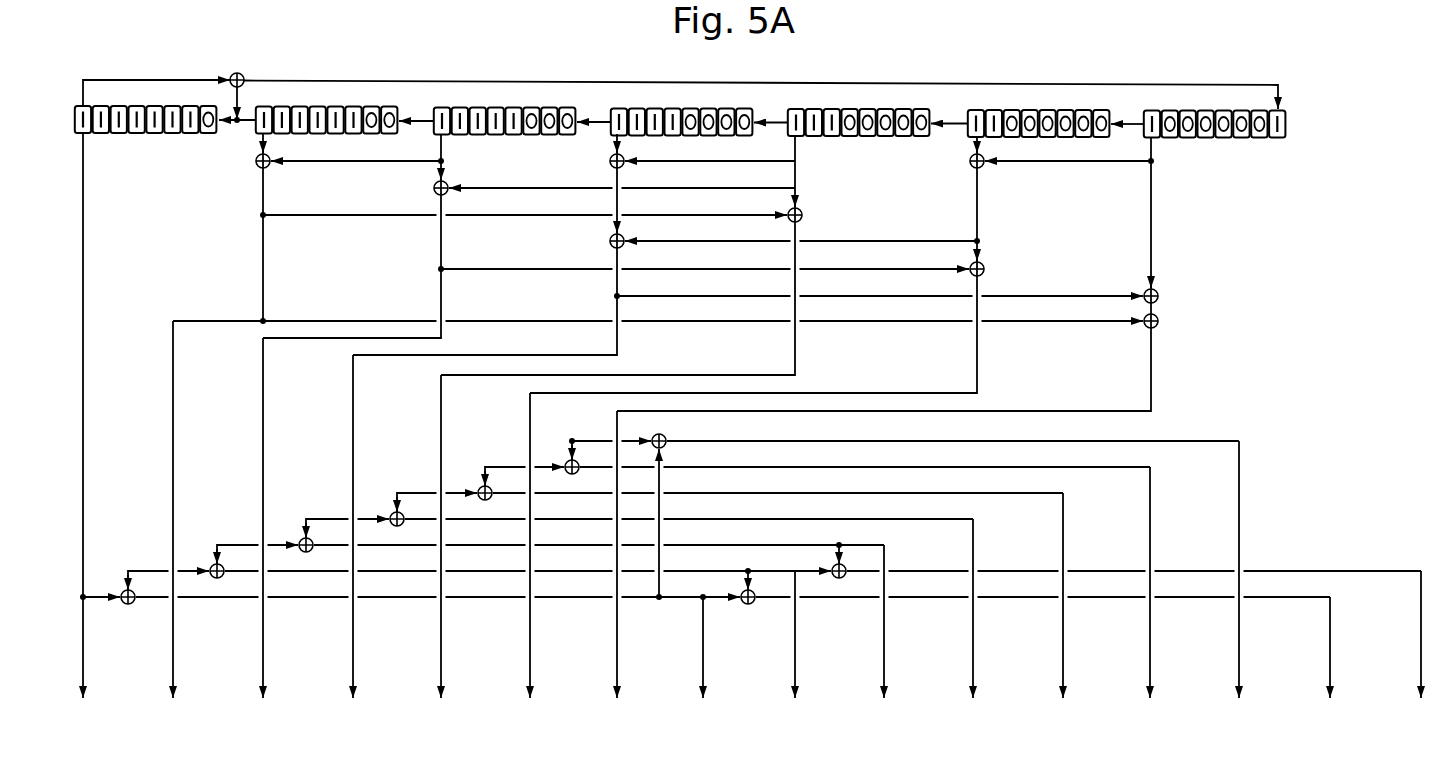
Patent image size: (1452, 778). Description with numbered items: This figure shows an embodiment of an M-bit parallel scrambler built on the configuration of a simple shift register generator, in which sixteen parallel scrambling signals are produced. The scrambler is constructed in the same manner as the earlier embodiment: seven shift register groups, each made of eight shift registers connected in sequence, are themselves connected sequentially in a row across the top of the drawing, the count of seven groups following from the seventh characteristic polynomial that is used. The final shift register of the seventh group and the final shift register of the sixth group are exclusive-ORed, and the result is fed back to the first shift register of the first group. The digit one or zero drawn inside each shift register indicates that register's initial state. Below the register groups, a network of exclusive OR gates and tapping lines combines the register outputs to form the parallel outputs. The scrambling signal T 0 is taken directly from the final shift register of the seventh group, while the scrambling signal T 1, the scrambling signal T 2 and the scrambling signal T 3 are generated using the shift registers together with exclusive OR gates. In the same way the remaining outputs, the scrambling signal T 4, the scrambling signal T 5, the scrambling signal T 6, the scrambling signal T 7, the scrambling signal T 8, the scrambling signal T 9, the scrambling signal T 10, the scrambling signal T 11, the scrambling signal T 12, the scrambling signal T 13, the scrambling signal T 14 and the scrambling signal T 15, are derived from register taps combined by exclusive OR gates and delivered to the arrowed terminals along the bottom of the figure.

The scrambling signal T0 0 is at (89, 432).
The scrambling signal T1 1 is at (179, 526).
The scrambling signal T2 2 is at (269, 534).
The scrambling signal T3 3 is at (359, 543).
The scrambling signal T4 4 is at (447, 553).
The scrambling signal T5 5 is at (536, 562).
The scrambling signal T6 6 is at (623, 571).
The scrambling signal T7 7 is at (709, 664).
The scrambling signal T8 8 is at (801, 651).
The scrambling signal T9 9 is at (890, 638).
The scrambling signal T10 10 is at (984, 625).
The scrambling signal T11 11 is at (1074, 612).
The scrambling signal T12 12 is at (1161, 599).
The scrambling signal T13 13 is at (1250, 586).
The scrambling signal T14 14 is at (1341, 664).
The scrambling signal T15 15 is at (1432, 651).